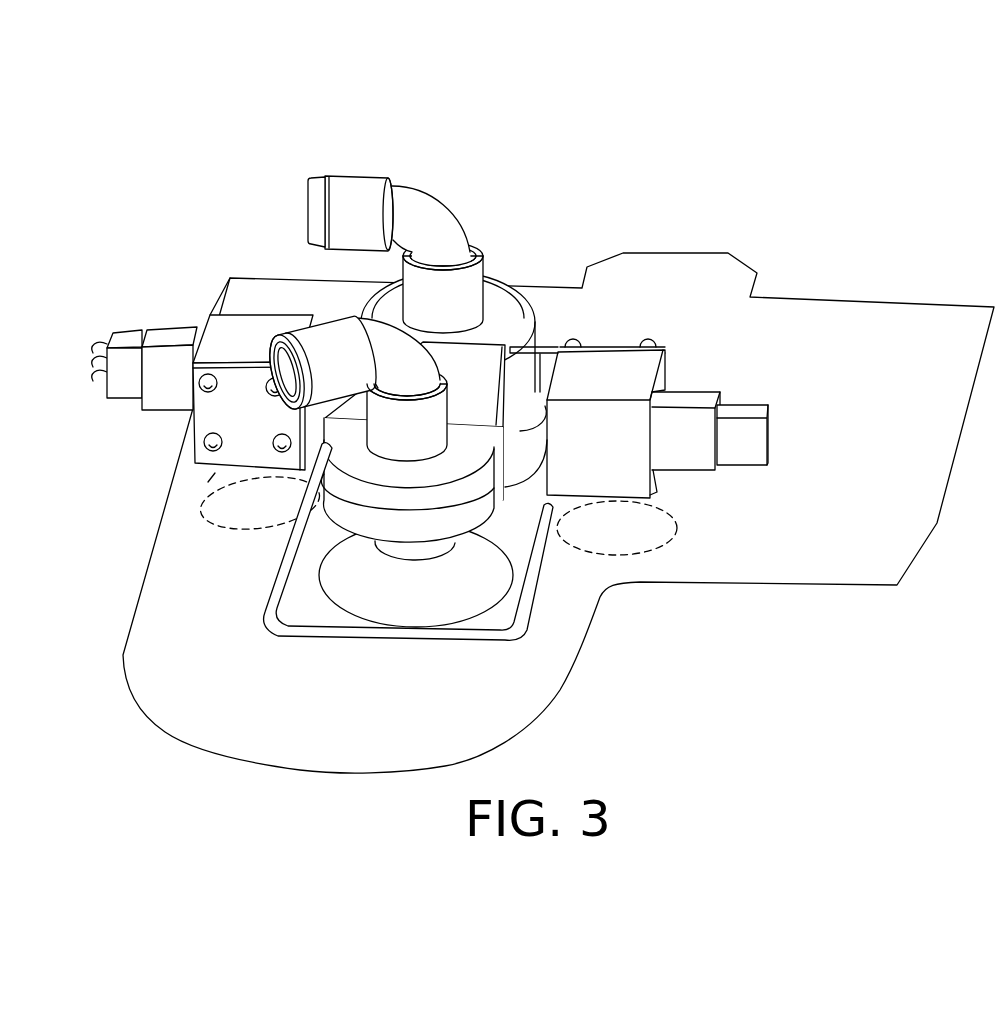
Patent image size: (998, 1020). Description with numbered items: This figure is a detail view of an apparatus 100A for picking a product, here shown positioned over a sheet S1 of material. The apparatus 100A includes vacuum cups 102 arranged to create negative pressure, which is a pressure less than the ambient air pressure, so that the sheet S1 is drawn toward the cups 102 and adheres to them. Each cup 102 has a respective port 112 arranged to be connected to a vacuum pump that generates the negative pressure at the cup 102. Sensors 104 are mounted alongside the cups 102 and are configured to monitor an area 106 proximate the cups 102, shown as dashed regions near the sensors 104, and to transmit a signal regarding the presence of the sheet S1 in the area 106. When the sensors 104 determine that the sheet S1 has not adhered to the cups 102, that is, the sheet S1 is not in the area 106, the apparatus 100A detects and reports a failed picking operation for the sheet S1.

The apparatus 100A is at (503, 186).
The vacuum cup 102 is at (523, 430).
The sensor 104 is at (233, 337).
The area 106 is at (233, 498).
The port 112 is at (352, 187).
The sheet S1 is at (783, 587).